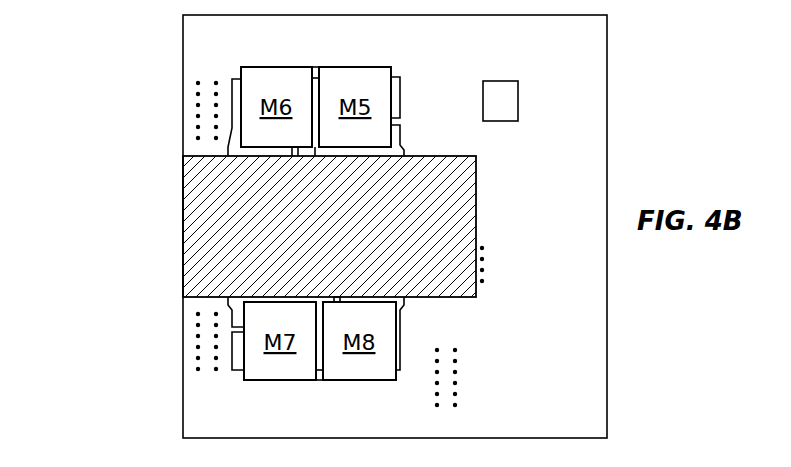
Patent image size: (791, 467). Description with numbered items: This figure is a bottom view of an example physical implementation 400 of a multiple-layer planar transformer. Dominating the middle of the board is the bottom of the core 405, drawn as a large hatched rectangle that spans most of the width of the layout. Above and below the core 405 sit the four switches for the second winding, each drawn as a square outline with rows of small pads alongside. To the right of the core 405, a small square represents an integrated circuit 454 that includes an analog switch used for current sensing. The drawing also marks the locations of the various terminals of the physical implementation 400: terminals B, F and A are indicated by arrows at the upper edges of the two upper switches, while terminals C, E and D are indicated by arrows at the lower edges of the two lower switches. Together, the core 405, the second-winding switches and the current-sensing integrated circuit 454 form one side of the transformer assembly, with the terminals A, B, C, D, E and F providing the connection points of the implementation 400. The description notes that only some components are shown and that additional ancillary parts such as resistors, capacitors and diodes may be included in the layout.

The physical implementation 400 is at (94, 126).
The core 405 is at (220, 228).
The integrated circuit 454 is at (500, 121).
The terminal A is at (398, 76).
The terminal B is at (234, 76).
The terminal C is at (234, 374).
The terminal D is at (405, 367).
The terminal E is at (319, 381).
The terminal F is at (315, 76).